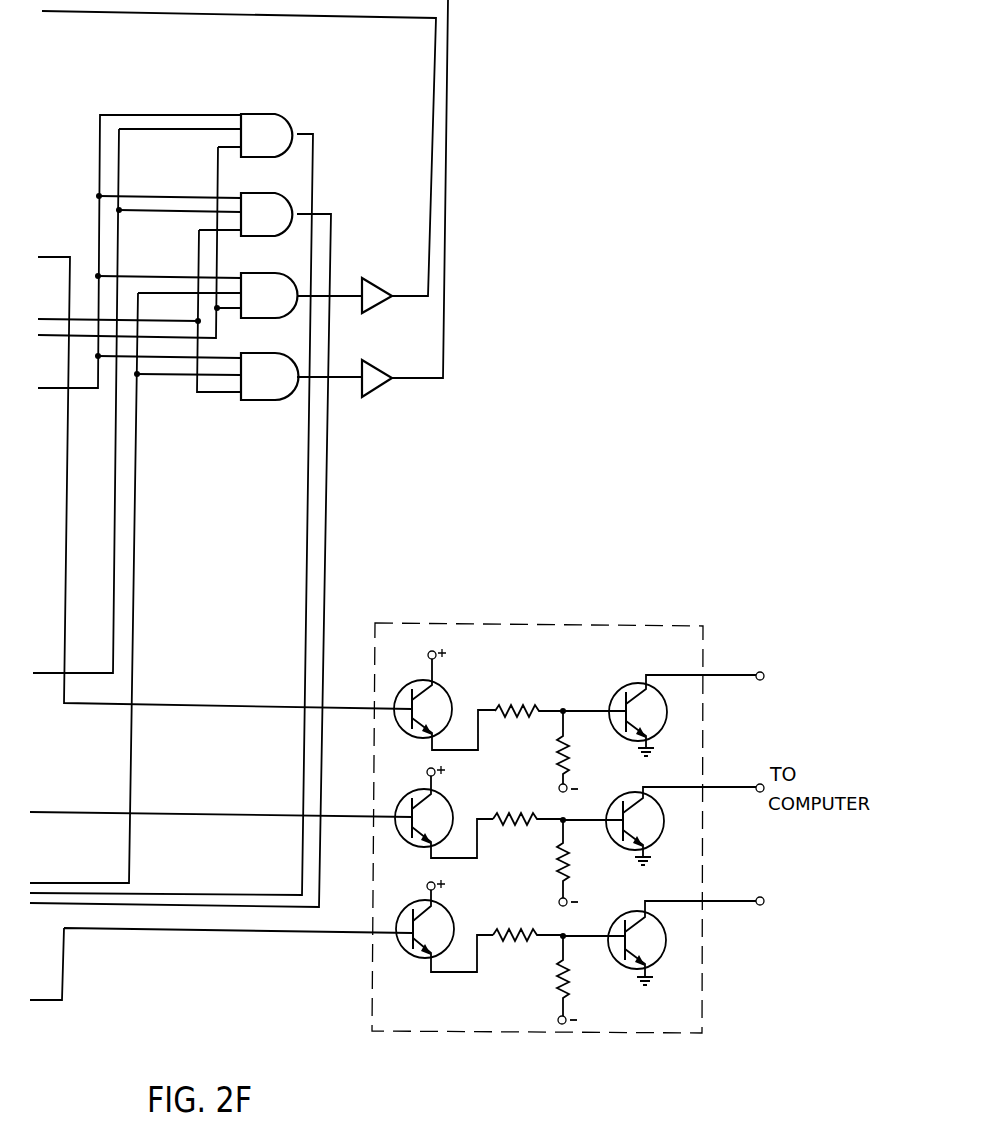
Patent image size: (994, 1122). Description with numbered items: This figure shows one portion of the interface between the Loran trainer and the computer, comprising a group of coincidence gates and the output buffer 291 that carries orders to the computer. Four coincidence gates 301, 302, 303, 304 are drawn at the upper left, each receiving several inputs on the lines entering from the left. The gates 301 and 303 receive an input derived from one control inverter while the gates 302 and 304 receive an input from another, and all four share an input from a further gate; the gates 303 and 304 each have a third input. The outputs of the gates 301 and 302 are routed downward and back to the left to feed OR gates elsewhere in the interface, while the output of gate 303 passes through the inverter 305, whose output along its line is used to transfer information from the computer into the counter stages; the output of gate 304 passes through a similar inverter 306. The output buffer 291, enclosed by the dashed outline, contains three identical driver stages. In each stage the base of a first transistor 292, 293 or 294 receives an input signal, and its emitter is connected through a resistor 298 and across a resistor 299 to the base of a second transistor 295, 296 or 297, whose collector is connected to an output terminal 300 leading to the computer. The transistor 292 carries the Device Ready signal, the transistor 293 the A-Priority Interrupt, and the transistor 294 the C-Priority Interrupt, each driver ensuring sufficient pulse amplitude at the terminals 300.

The output buffer 291 is at (497, 623).
The transistor 292 is at (447, 705).
The transistor 293 is at (405, 805).
The transistor 294 is at (406, 919).
The transistor 295 is at (612, 701).
The transistor 296 is at (608, 809).
The transistor 297 is at (609, 924).
The resistor 298 is at (541, 697).
The resistor 299 is at (560, 768).
The output terminal 300 is at (773, 667).
The coincidence gate 301 is at (290, 115).
The coincidence gate 302 is at (295, 194).
The coincidence gate 303 is at (289, 276).
The coincidence gate 304 is at (291, 356).
The inverter 305 is at (396, 284).
The inverter 306 is at (377, 393).